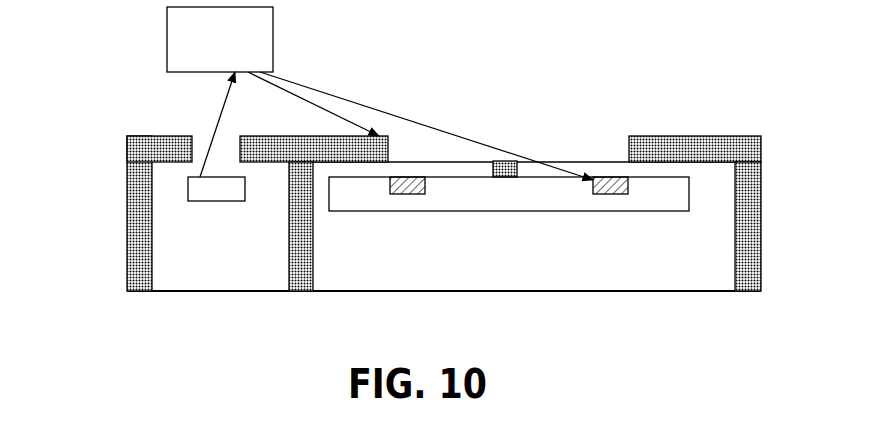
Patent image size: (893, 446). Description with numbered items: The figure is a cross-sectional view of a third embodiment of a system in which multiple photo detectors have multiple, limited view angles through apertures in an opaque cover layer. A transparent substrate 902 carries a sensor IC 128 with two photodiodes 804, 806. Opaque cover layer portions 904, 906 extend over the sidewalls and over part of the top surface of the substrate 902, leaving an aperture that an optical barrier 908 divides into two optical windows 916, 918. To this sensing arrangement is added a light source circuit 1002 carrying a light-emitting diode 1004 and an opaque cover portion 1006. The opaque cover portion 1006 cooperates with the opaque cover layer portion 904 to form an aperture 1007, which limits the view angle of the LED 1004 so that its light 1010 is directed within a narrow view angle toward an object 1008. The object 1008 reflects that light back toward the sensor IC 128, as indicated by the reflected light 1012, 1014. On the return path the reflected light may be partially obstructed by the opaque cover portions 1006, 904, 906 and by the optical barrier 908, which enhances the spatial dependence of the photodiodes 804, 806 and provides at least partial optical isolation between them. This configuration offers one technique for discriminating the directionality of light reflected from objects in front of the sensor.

The sensor IC 128 is at (508, 212).
The photodiode 804 is at (395, 195).
The photodiode 806 is at (613, 195).
The transparent substrate 902 is at (353, 292).
The opaque cover layer portion 904 is at (289, 243).
The opaque cover layer portion 906 is at (757, 198).
The optical barrier 908 is at (493, 168).
The optical window 916 is at (468, 118).
The optical window 918 is at (583, 138).
The light source circuit 1002 is at (198, 292).
The light-emitting diode 1004 is at (227, 202).
The opaque cover portion 1006 is at (125, 173).
The aperture 1007 is at (196, 145).
The object 1008 is at (167, 44).
The light 1010 is at (221, 107).
The reflected light 1012 is at (308, 103).
The reflected light 1014 is at (372, 104).